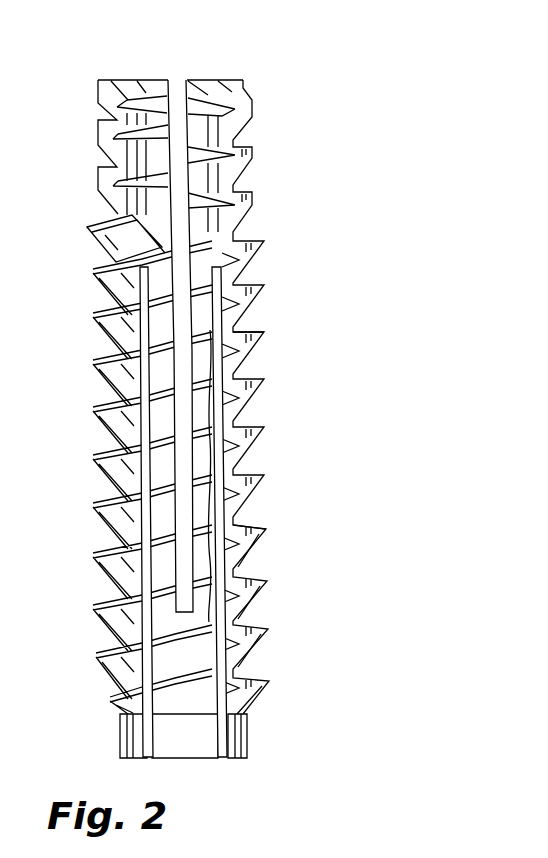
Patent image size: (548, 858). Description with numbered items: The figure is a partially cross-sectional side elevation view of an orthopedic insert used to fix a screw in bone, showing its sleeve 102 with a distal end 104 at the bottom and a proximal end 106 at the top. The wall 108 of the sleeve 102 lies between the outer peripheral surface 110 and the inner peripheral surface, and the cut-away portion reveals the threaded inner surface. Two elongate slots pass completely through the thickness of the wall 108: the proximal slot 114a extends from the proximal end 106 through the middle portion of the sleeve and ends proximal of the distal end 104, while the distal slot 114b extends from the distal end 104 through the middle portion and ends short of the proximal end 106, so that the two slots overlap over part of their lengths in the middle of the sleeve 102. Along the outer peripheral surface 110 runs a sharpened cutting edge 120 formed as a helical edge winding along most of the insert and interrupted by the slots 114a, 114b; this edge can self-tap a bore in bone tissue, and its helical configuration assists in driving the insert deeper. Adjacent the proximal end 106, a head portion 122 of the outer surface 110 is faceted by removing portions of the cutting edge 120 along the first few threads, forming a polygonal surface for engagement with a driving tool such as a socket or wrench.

The sleeve 102 is at (175, 409).
The distal end 104 is at (118, 733).
The proximal end 106 is at (223, 83).
The wall 108 is at (247, 256).
The outer peripheral surface 110 is at (248, 307).
The proximal slot 114a is at (177, 100).
The distal slot 114b is at (140, 268).
The cutting edge 120 is at (261, 338).
The head portion 122 is at (97, 132).